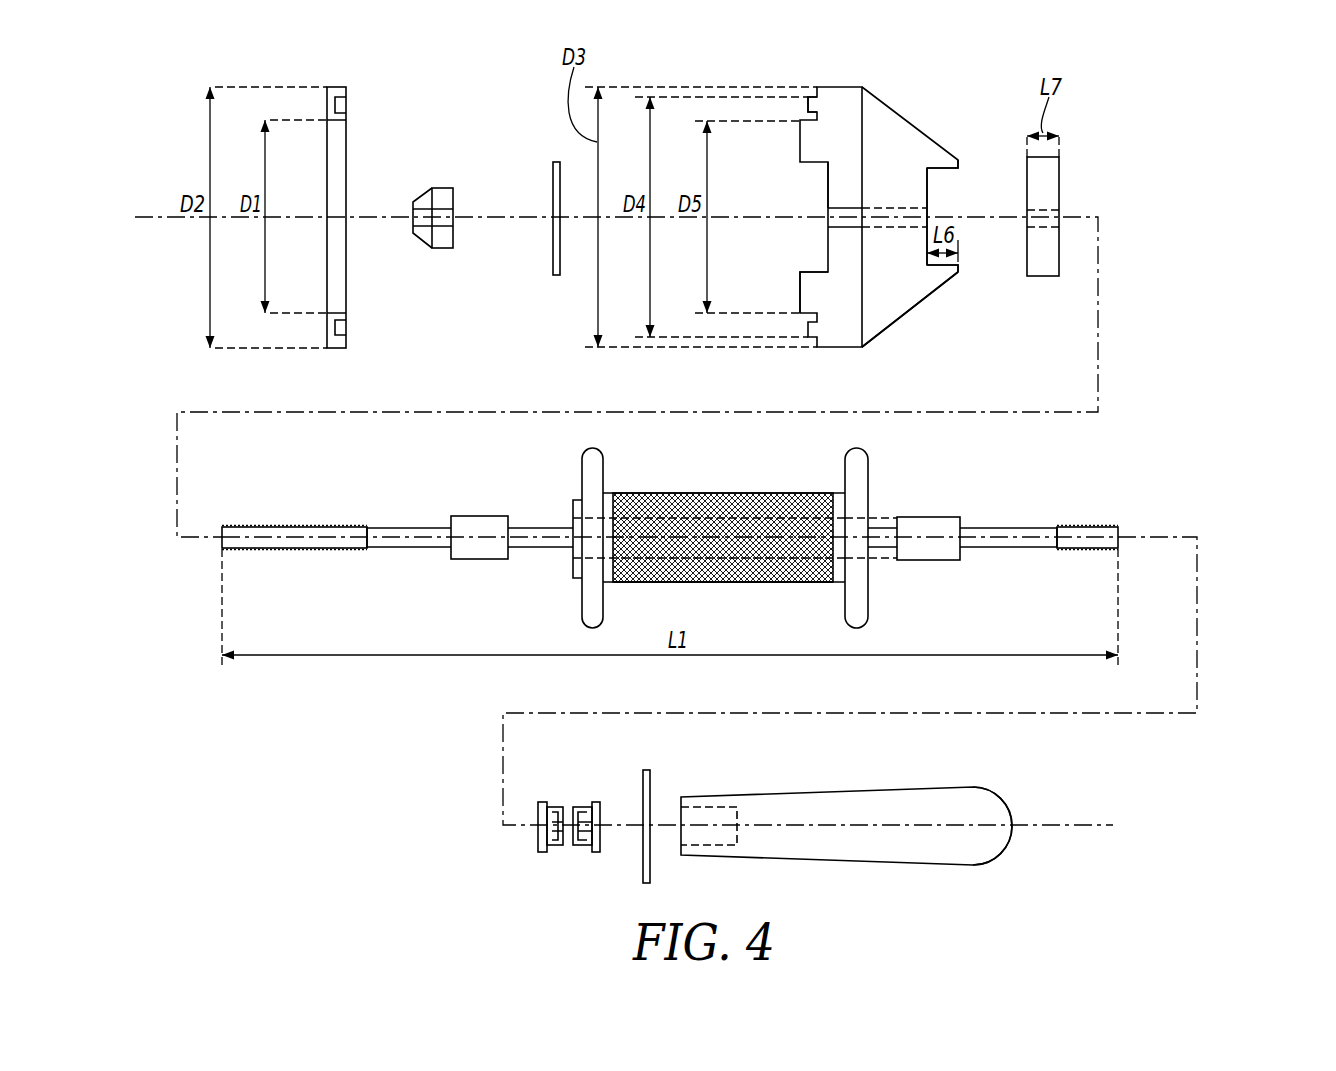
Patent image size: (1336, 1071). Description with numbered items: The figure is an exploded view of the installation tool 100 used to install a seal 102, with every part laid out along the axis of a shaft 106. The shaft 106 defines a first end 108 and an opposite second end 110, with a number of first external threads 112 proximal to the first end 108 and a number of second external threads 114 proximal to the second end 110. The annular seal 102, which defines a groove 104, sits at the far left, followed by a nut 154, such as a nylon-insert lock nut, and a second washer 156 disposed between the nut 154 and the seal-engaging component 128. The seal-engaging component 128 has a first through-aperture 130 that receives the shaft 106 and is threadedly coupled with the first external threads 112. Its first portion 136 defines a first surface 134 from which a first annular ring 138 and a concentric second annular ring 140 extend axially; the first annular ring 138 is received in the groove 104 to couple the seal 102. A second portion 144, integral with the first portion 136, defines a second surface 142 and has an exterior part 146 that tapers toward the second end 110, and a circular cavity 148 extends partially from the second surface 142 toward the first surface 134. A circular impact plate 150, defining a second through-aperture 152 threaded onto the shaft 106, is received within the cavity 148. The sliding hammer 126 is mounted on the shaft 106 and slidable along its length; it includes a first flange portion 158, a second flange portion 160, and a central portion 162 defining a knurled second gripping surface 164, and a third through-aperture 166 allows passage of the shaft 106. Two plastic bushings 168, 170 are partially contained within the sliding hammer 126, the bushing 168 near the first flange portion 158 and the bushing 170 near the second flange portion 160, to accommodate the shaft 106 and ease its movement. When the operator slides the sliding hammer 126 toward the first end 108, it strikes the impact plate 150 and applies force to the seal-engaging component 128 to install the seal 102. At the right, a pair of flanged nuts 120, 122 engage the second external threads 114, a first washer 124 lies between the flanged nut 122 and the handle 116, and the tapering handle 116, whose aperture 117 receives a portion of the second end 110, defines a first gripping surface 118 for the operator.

The installation tool 100 is at (1236, 117).
The seal 102 is at (337, 87).
The groove 104 is at (350, 328).
The shaft 106 is at (988, 528).
The first end 108 is at (213, 546).
The second end 110 is at (1097, 558).
The first external threads 112 is at (305, 527).
The second external threads 114 is at (1091, 527).
The handle 116 is at (993, 808).
The aperture 117 is at (700, 815).
The first gripping surface 118 is at (907, 787).
The flanged nut 120 is at (542, 842).
The flanged nut 122 is at (595, 852).
The first washer 124 is at (650, 875).
The sliding hammer 126 is at (690, 492).
The seal-engaging component 128 is at (946, 126).
The first through-aperture 130 is at (880, 207).
The first surface 134 is at (828, 177).
The first portion 136 is at (837, 84).
The first annular ring 138 is at (808, 105).
The second annular ring 140 is at (800, 288).
The second surface 142 is at (962, 167).
The second portion 144 is at (925, 314).
The exterior part 146 is at (960, 274).
The cavity 148 is at (935, 195).
The impact plate 150 is at (1047, 263).
The second through-aperture 152 is at (1051, 211).
The nut 154 is at (440, 188).
The second washer 156 is at (553, 172).
The first flange portion 158 is at (593, 450).
The second flange portion 160 is at (858, 450).
The central portion 162 is at (627, 502).
The second gripping surface 164 is at (758, 583).
The third through-aperture 166 is at (866, 521).
The bushing 168 is at (468, 530).
The bushing 170 is at (927, 560).